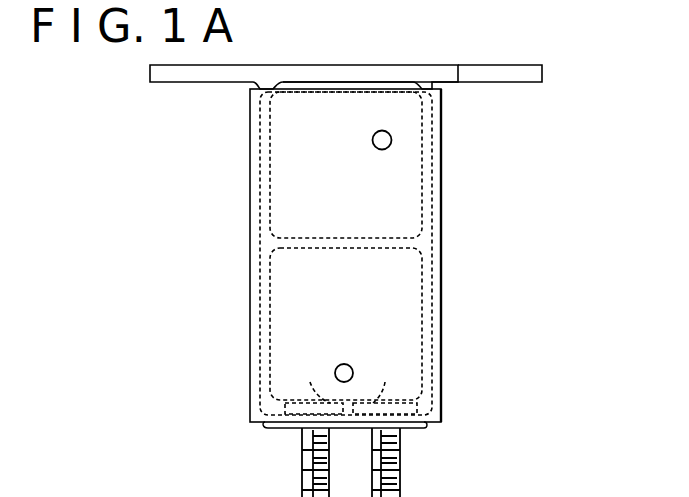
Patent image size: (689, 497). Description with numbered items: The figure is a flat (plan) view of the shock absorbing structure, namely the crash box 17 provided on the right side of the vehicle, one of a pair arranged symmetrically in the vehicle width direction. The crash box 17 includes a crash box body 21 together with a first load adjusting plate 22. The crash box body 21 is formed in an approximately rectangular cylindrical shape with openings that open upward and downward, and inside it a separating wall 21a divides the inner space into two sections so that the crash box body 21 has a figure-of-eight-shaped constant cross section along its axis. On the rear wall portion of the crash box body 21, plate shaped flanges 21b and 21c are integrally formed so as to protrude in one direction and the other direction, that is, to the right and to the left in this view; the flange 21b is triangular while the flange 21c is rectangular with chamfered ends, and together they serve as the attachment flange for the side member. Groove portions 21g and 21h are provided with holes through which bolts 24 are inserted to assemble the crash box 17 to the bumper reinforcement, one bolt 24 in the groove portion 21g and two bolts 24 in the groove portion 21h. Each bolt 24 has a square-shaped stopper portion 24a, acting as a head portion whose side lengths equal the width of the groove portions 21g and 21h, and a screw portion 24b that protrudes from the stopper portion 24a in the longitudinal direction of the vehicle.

The crash box 17 is at (558, 192).
The crash box body 21 is at (430, 208).
The separating wall 21a is at (356, 248).
The flange 21b is at (513, 82).
The flange 21c is at (190, 82).
The groove portion 21g is at (371, 379).
The groove portion 21h is at (307, 379).
The first load adjusting plate 22 is at (441, 150).
The bolt 24 is at (372, 454).
The stopper portion 24a is at (262, 389).
The screw portion 24b is at (302, 454).